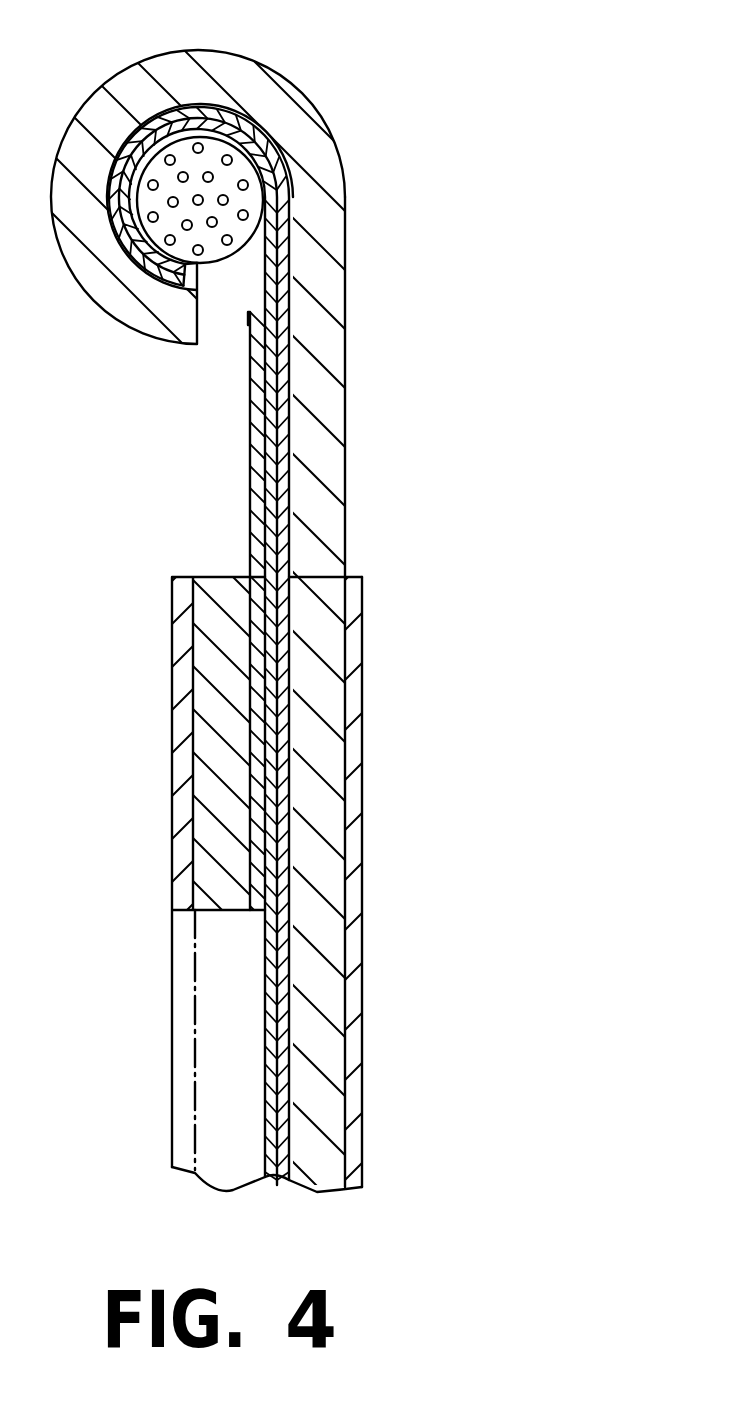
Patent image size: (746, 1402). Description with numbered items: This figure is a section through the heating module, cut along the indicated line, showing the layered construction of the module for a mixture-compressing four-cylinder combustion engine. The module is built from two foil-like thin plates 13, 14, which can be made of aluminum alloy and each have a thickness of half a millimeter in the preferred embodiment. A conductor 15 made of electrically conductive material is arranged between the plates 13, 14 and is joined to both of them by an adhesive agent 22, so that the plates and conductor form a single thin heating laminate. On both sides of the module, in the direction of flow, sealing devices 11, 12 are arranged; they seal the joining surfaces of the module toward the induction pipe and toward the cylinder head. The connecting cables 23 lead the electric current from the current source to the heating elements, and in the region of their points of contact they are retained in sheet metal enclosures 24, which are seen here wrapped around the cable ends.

The sealing device 11 is at (180, 775).
The sealing device 12 is at (352, 863).
The foil-like thin plate 13 is at (210, 655).
The foil-like thin plate 14 is at (320, 1048).
The conductor 15 is at (279, 646).
The adhesive agent 22 is at (280, 693).
The connecting cable 23 is at (213, 177).
The sheet metal enclosure 24 is at (180, 82).